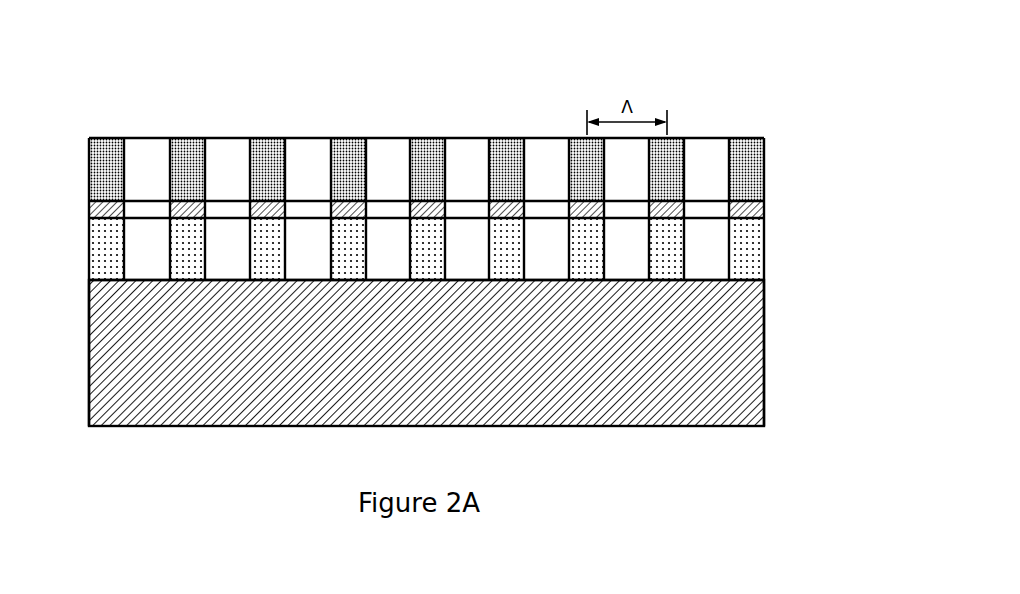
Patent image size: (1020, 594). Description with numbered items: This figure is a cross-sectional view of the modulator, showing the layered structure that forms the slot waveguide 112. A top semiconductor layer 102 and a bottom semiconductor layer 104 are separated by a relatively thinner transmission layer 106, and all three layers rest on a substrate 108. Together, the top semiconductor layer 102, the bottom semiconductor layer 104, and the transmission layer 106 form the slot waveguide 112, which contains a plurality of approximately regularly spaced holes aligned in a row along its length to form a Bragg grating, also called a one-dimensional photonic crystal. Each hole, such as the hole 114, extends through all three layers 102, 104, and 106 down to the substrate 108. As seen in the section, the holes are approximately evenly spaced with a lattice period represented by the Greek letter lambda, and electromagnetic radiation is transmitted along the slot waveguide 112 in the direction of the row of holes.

The slot waveguide 112 is at (225, 85).
The hole 114 is at (389, 150).
The top semiconductor layer 102 is at (777, 162).
The transmission layer 106 is at (775, 208).
The bottom semiconductor layer 104 is at (778, 247).
The substrate 108 is at (748, 368).